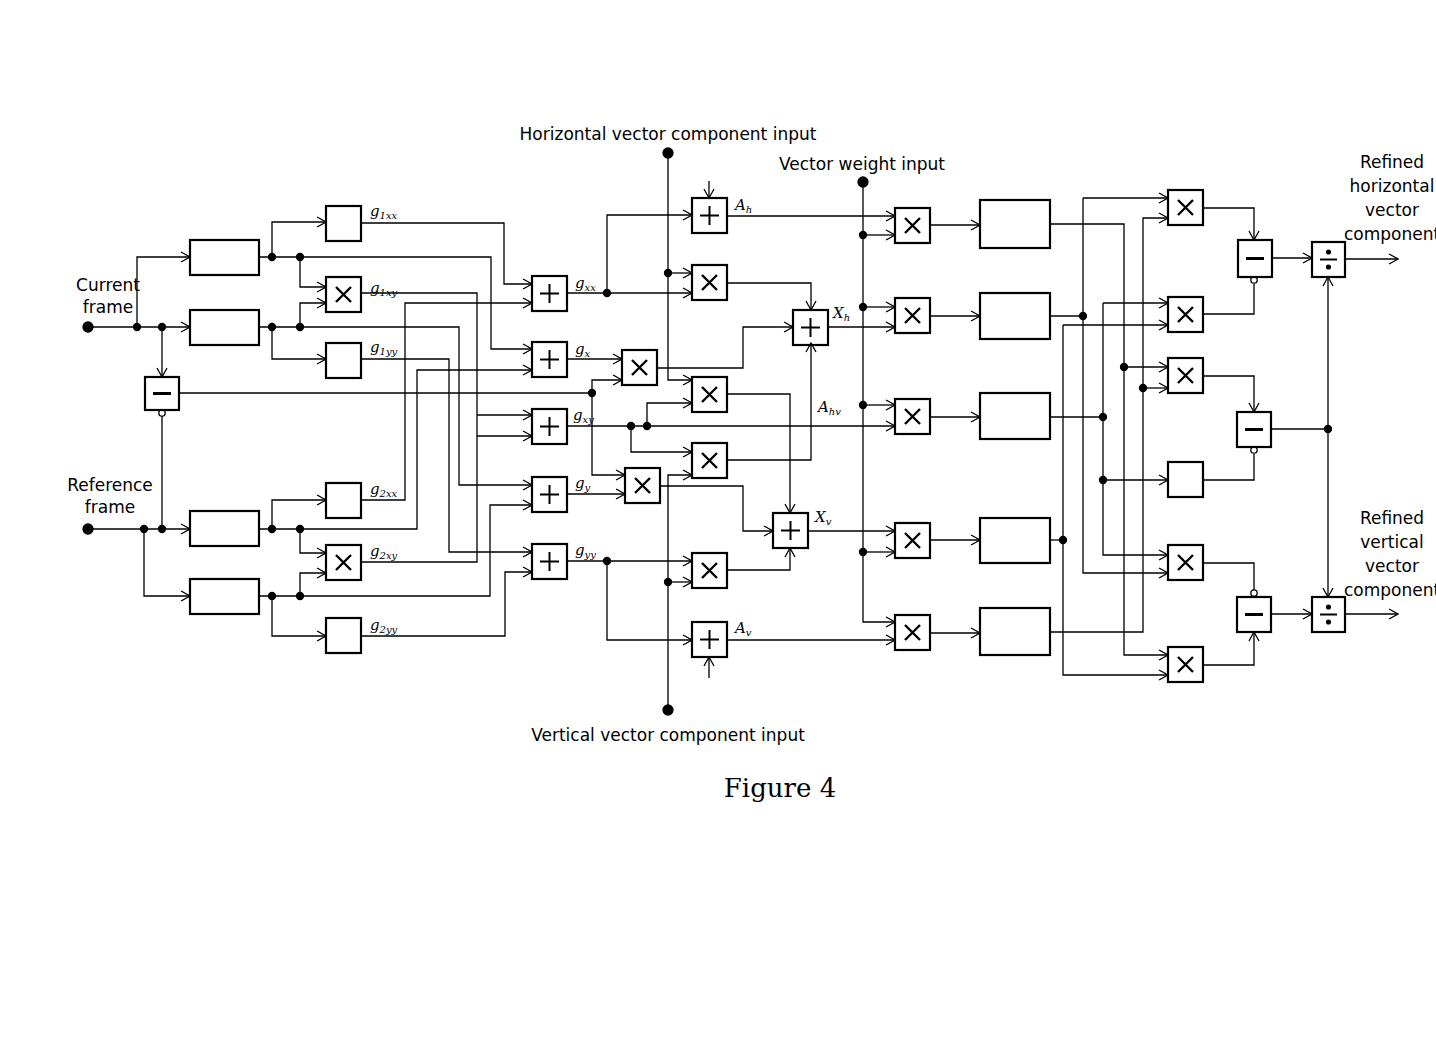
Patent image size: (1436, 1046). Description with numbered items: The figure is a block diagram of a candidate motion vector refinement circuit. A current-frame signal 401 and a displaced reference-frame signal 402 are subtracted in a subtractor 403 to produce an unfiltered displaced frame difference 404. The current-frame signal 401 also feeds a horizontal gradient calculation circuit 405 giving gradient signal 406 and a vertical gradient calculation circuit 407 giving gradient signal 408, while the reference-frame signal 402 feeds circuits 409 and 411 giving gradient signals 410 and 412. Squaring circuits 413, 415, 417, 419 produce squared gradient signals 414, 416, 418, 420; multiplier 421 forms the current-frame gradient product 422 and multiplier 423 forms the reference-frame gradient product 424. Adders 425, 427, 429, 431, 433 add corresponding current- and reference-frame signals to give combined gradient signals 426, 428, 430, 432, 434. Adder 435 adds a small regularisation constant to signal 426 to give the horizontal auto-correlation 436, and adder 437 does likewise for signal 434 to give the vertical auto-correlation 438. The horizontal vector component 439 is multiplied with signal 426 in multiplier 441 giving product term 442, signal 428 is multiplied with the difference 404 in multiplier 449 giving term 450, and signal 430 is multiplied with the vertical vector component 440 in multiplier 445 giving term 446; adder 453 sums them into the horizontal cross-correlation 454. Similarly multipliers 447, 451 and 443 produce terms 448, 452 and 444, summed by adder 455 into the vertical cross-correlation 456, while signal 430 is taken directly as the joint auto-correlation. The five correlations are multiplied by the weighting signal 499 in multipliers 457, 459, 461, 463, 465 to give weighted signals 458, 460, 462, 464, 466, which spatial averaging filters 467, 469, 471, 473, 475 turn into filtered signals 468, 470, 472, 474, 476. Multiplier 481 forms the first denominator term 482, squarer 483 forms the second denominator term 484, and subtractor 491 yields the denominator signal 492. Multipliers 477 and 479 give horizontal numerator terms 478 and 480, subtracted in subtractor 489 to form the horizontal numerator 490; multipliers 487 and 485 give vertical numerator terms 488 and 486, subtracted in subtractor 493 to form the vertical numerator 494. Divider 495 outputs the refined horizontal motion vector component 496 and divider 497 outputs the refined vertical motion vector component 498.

The current-frame signal 401 is at (90, 340).
The displaced reference-frame signal 402 is at (90, 540).
The subtractor 403 is at (143, 406).
The displaced frame difference (DFD) 404 is at (205, 400).
The horizontal gradient calculation circuit 405 is at (225, 236).
The current-frame horizontal gradient signal g1x 406 is at (272, 222).
The vertical gradient calculation circuit 407 is at (212, 308).
The current-frame vertical gradient signal g1y 408 is at (272, 360).
The horizontal gradient calculation circuit 409 is at (223, 507).
The reference-frame horizontal gradient signal g2x 410 is at (272, 500).
The vertical gradient calculation circuit 411 is at (205, 618).
The reference-frame vertical gradient signal g2y 412 is at (274, 640).
The squaring circuit 413 is at (345, 203).
The squared gradient signal g1xx 414 is at (437, 220).
The squaring circuit 415 is at (323, 375).
The squared gradient signal g1yy 416 is at (372, 362).
The squaring circuit 417 is at (340, 480).
The squared gradient signal g2xx 418 is at (400, 435).
The squaring circuit 419 is at (345, 655).
The squared gradient signal g2yy 420 is at (437, 645).
The multiplier 421 is at (362, 283).
The current-frame gradient product signal g1xy 422 is at (432, 293).
The multiplier 423 is at (380, 573).
The reference-frame gradient product signal g2xy 424 is at (408, 563).
The adder 425 is at (550, 272).
The combined horizontal squared-gradient signal gxx 426 is at (605, 215).
The adder 427 is at (549, 340).
The combined horizontal gradient signal gx 428 is at (600, 356).
The adder 429 is at (535, 447).
The combined gradient product signal gxy 430 is at (580, 432).
The adder 431 is at (549, 514).
The combined vertical gradient signal gy 432 is at (590, 498).
The adder 433 is at (552, 581).
The combined vertical squared-gradient signal gyy 434 is at (602, 628).
The adder 435 is at (728, 230).
The horizontal auto-correlation signal Ah 436 is at (797, 220).
The adder 437 is at (730, 659).
The vertical auto-correlation signal Av 438 is at (808, 645).
The horizontal component of the candidate vector 439 is at (660, 156).
The vertical component of the candidate vector 440 is at (660, 708).
The multiplier 441 is at (730, 275).
The first product term 442 is at (745, 288).
The multiplier 443 is at (730, 404).
The third product term 444 is at (745, 345).
The multiplier 445 is at (730, 455).
The third product term 446 is at (812, 462).
The multiplier 447 is at (707, 552).
The first product term 448 is at (742, 574).
The multiplier 449 is at (639, 348).
The second product term 450 is at (698, 370).
The multiplier 451 is at (643, 504).
The second product term 452 is at (684, 488).
The adder 453 is at (818, 308).
The horizontal cross-correlation signal Xh 454 is at (840, 334).
The adder 455 is at (810, 550).
The vertical cross-correlation signal Xv 456 is at (832, 526).
The multiplier 457 is at (912, 245).
The weighted correlation signal 458 is at (952, 222).
The multiplier 459 is at (910, 297).
The weighted correlation signal 460 is at (952, 313).
The multiplier 461 is at (912, 397).
The weighted correlation signal 462 is at (952, 413).
The multiplier 463 is at (912, 520).
The weighted correlation signal 464 is at (953, 537).
The multiplier 465 is at (912, 652).
The weighted correlation signal 466 is at (954, 630).
The spatial averaging filter 467 is at (1015, 197).
The filtered horizontal auto-correlation signal 468 is at (1062, 218).
The spatial averaging filter 469 is at (1015, 290).
The filtered horizontal cross-correlation signal 470 is at (1100, 195).
The spatial averaging filter 471 is at (1017, 390).
The filtered joint auto-correlation signal 472 is at (1108, 300).
The spatial averaging filter 473 is at (1015, 515).
The filtered vertical cross-correlation signal 474 is at (1080, 684).
The spatial averaging filter 475 is at (1015, 660).
The filtered vertical auto-correlation signal 476 is at (1078, 630).
The multiplier 477 is at (1185, 188).
The first horizontal numerator term 478 is at (1257, 213).
The multiplier 479 is at (1182, 295).
The second horizontal numerator term 480 is at (1258, 308).
The multiplier 481 is at (1192, 394).
The first denominator term 482 is at (1256, 378).
The squarer 483 is at (1185, 460).
The second denominator term 484 is at (1247, 482).
The multiplier 485 is at (1184, 544).
The second vertical numerator term 486 is at (1216, 570).
The multiplier 487 is at (1187, 685).
The first vertical numerator term 488 is at (1243, 670).
The subtractor 489 is at (1270, 240).
The horizontal numerator signal 490 is at (1280, 262).
The subtractor 491 is at (1272, 412).
The denominator signal 492 is at (1332, 426).
The subtractor 493 is at (1272, 634).
The vertical numerator signal 494 is at (1282, 608).
The divider 495 is at (1345, 278).
The refined horizontal motion vector component 496 is at (1397, 262).
The divider 497 is at (1345, 633).
The refined vertical motion vector component 498 is at (1397, 618).
The weighting signal 499 is at (855, 184).